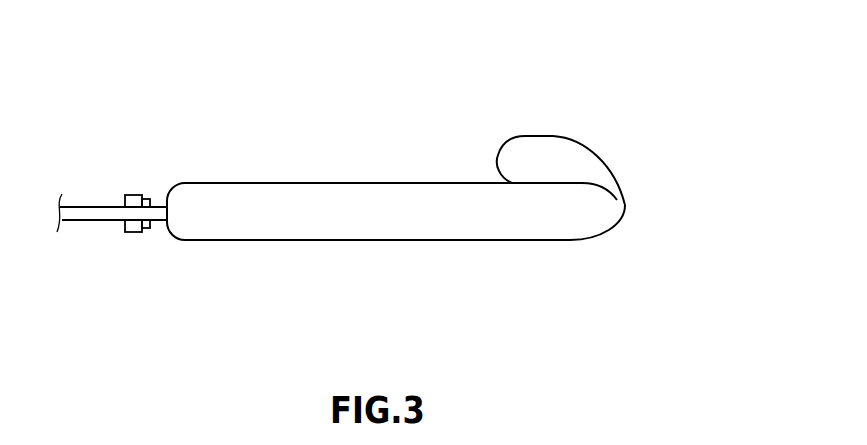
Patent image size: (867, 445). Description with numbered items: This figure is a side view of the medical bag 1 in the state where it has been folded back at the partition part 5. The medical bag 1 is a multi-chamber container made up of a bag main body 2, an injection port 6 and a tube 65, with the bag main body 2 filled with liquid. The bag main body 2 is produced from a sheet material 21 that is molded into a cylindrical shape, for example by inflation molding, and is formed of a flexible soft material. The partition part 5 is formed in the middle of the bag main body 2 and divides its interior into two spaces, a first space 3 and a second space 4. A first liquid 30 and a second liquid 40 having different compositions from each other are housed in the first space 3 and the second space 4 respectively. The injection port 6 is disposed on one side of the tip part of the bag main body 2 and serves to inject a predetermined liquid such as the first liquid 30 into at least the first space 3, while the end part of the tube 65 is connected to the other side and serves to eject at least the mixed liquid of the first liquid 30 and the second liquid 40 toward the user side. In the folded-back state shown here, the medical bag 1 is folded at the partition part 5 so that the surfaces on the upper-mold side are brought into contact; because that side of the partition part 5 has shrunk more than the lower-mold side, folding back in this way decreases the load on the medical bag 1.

The medical bag 1 is at (416, 128).
The bag main body 2 is at (260, 247).
The sheet material 21 is at (328, 226).
The first space 3 is at (270, 198).
The first liquid 30 is at (312, 198).
The second space 4 is at (538, 153).
The second liquid 40 is at (565, 160).
The partition part 5 is at (625, 205).
The injection port 6 is at (130, 195).
The tube 65 is at (90, 213).